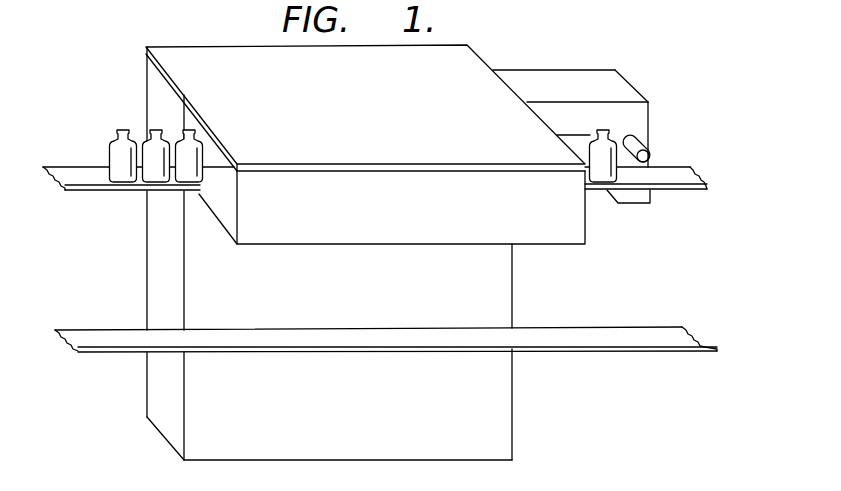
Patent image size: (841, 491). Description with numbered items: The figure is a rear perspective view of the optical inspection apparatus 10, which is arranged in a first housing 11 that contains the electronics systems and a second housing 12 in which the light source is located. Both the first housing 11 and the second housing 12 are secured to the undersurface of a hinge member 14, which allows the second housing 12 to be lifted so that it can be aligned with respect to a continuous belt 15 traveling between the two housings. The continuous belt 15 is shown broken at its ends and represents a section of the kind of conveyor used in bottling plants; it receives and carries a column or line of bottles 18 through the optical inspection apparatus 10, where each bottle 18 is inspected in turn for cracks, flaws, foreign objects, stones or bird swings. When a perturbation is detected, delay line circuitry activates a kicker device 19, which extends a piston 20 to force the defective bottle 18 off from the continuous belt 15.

The optical inspection apparatus 10 is at (519, 54).
The first housing 11 is at (157, 100).
The second housing 12 is at (383, 217).
The hinge member 14 is at (352, 115).
The continuous belt 15 is at (83, 174).
The bottle 18 is at (182, 136).
The kicker device 19 is at (640, 117).
The piston 20 is at (643, 145).